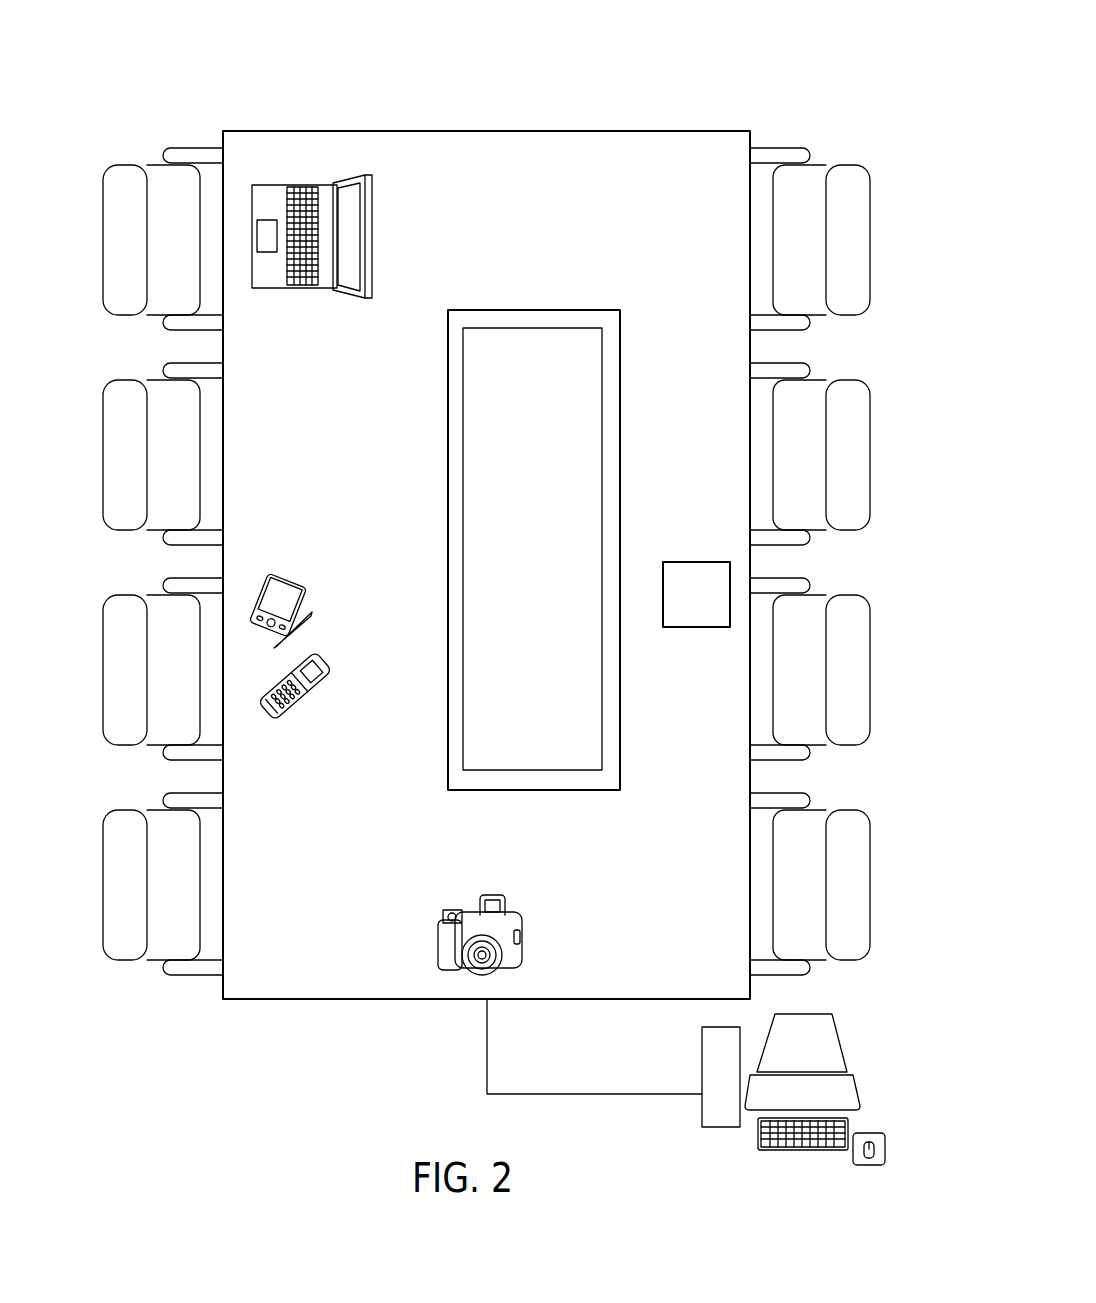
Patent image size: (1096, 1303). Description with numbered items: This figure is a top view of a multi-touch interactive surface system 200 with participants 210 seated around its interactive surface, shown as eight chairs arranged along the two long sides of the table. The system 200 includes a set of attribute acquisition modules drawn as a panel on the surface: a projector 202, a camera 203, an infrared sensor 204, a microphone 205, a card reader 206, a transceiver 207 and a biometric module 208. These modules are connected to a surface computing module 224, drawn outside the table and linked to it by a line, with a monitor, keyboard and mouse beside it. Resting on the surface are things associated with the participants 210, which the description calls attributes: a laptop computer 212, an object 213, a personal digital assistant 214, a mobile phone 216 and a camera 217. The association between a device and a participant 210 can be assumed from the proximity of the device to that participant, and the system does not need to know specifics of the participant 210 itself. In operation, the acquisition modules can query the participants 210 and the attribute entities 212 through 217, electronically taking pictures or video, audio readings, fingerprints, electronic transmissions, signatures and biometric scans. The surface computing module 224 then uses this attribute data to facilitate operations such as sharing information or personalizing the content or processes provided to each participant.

The interactive surface system 200 is at (177, 74).
The projector 202 is at (475, 348).
The camera 203 is at (475, 416).
The infrared sensor 204 is at (475, 484).
The microphone 205 is at (475, 551).
The card reader 206 is at (475, 619).
The transceiver 207 is at (475, 686).
The biometric module 208 is at (475, 753).
The participants 210 is at (103, 238).
The laptop computer 212 is at (372, 223).
The object 213 is at (700, 562).
The personal digital assistant 214 is at (279, 574).
The mobile phone 216 is at (293, 708).
The camera 217 is at (523, 932).
The surface computing module 224 is at (702, 1056).